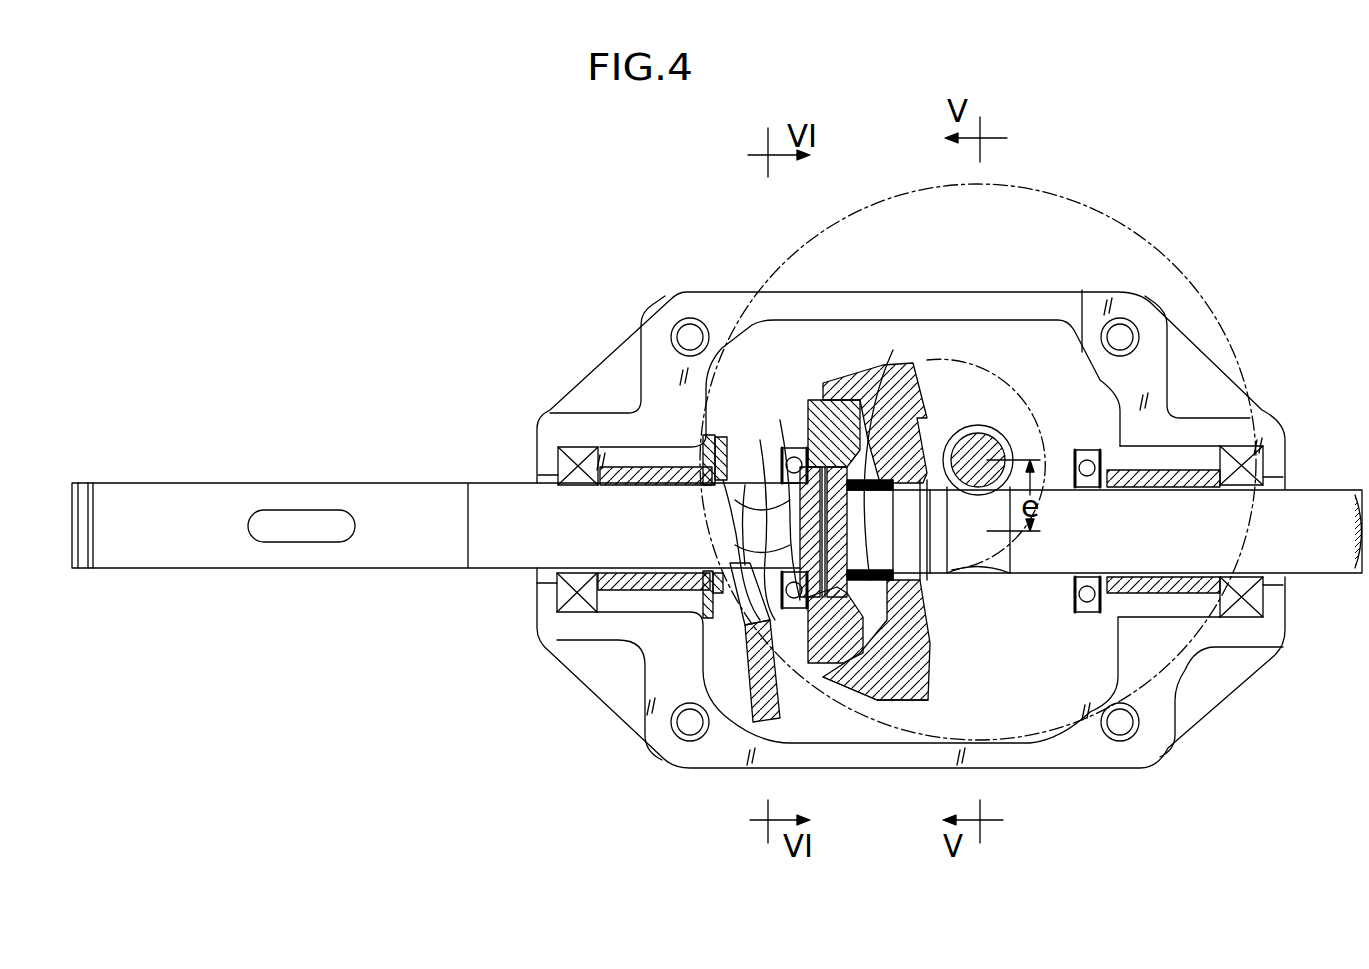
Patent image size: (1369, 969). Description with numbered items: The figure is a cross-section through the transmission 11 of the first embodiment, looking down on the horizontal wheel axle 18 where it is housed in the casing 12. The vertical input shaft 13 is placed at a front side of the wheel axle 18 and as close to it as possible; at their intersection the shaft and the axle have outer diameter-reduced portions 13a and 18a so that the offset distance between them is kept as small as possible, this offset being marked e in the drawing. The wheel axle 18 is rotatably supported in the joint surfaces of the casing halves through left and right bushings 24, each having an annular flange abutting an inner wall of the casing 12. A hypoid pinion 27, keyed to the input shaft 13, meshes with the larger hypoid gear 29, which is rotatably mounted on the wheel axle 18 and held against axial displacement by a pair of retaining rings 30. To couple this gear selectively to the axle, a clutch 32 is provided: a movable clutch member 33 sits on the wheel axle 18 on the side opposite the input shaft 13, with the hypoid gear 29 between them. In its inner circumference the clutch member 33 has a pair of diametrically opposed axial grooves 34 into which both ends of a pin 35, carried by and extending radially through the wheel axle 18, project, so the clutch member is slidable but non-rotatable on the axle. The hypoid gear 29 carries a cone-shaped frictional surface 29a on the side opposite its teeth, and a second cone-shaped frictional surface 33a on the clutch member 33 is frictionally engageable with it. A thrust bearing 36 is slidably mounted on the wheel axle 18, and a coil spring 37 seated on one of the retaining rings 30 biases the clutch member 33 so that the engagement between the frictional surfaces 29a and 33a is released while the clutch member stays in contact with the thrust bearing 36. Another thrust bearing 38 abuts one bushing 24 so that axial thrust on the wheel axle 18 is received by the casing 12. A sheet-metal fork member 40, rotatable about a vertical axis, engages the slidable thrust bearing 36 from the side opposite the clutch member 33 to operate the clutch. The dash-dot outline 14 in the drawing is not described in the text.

The transmission 11 is at (662, 774).
The casing 12 is at (985, 305).
The input shaft 13 is at (985, 440).
The outer diameter-reduced portion 13a is at (975, 425).
The internal gear 14 is at (775, 290).
The wheel axle 18 is at (1140, 547).
The outer diameter-reduced portion 18a is at (972, 566).
The bushing 24 is at (1157, 477).
The hypoid pinion 27 is at (1082, 301).
The larger hypoid gear 29 is at (913, 680).
The cone-shaped frictional surface 29a is at (893, 350).
The retaining ring 30 is at (910, 590).
The clutch 32 is at (852, 716).
The movable clutch member 33 is at (810, 417).
The second cone-shaped frictional surface 33a is at (822, 398).
The axial groove 34 is at (800, 495).
The pin 35 is at (800, 540).
The thrust bearing 36 is at (780, 460).
The coil spring 37 is at (882, 377).
The thrust bearing 38 is at (1080, 448).
The fork member 40 is at (745, 617).